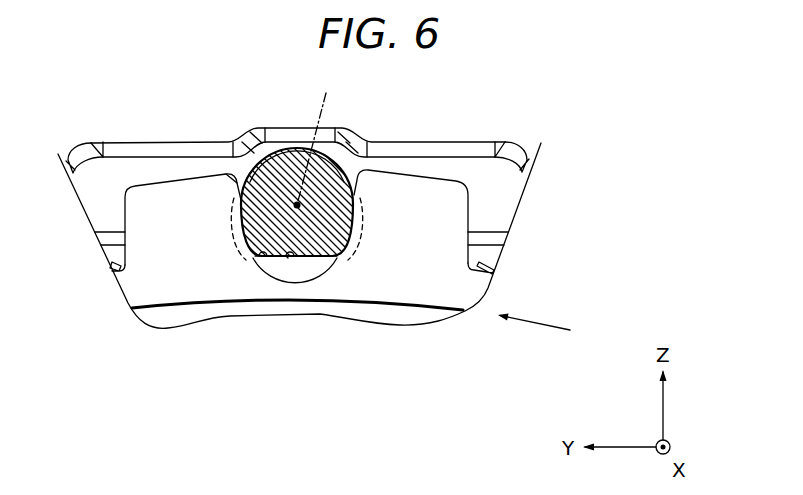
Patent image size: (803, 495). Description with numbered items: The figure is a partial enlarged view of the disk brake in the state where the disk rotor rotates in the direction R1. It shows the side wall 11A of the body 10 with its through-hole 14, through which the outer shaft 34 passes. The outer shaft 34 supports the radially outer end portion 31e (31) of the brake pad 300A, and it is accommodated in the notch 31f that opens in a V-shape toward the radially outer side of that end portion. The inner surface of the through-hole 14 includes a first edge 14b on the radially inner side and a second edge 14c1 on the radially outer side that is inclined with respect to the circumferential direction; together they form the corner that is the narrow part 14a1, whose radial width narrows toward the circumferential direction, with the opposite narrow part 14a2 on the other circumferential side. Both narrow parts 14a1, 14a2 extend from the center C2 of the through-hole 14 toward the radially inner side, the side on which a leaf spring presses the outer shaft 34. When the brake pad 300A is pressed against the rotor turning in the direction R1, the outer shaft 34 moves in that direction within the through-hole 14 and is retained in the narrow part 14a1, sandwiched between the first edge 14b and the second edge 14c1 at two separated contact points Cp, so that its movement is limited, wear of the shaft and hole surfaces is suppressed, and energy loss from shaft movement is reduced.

The body 10 is at (297, 122).
The side wall 11A is at (452, 140).
The through-hole 14 is at (341, 147).
The narrow part 14a1 is at (230, 247).
The narrow part 14a2 is at (365, 250).
The first edge 14b is at (253, 263).
The second edge 14c1 is at (217, 172).
The brake pad end portion 31 is at (299, 213).
The end portion 31e is at (177, 200).
The notch 31f is at (311, 272).
The outer shaft 34 is at (285, 172).
The brake pad 300A is at (472, 190).
The center of the through-hole C2 is at (316, 141).
The contact point Cp is at (233, 198).
The rotation direction R1 is at (534, 336).